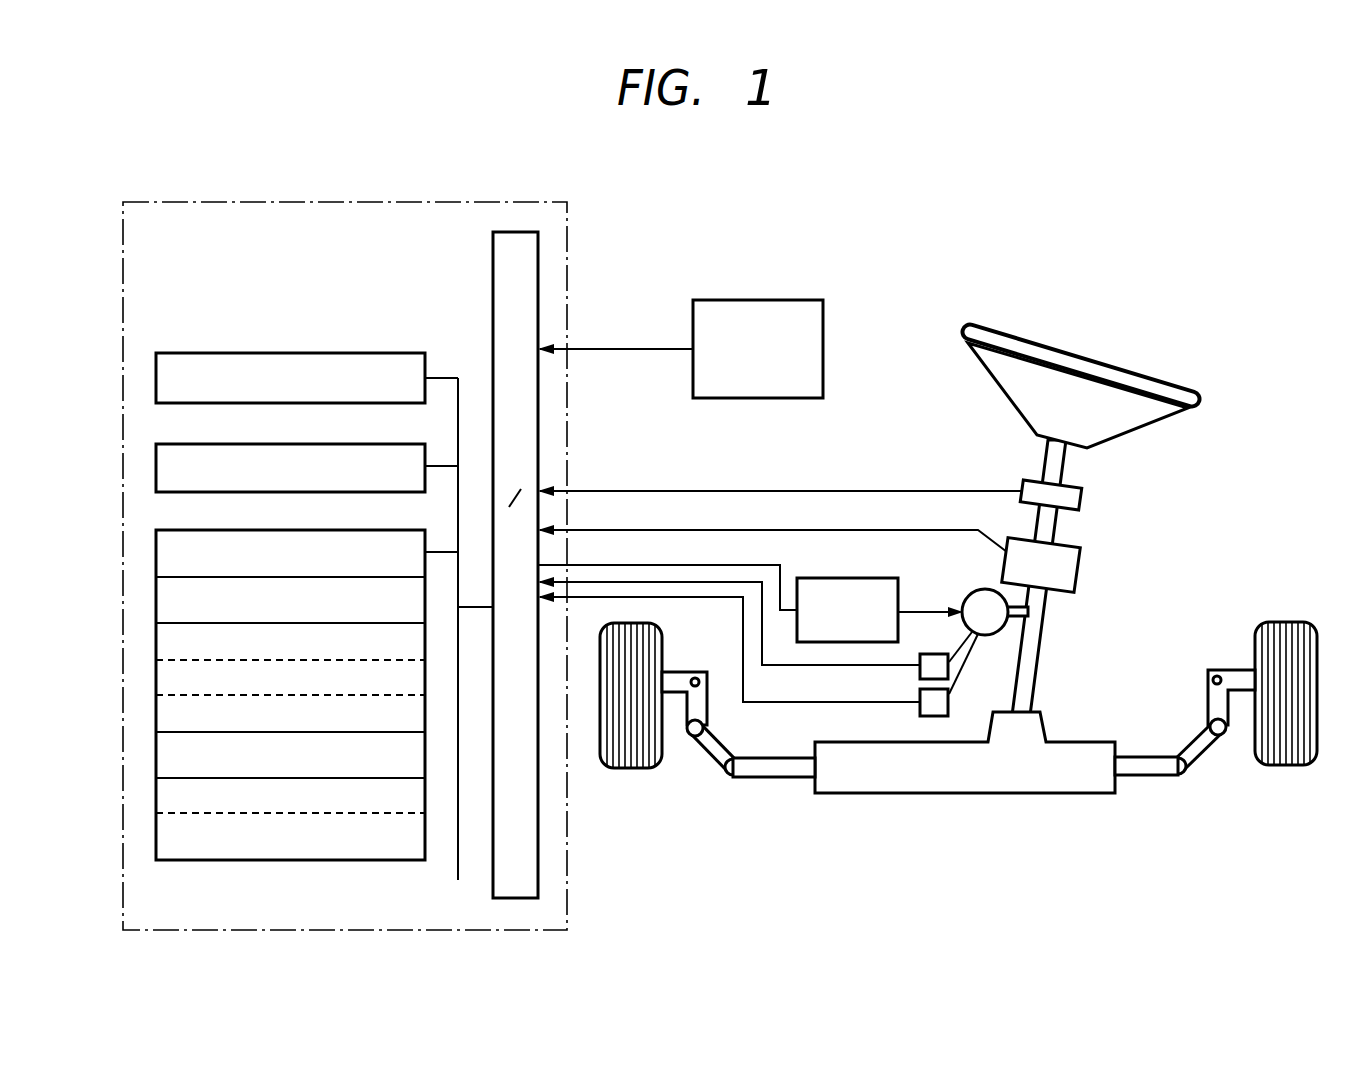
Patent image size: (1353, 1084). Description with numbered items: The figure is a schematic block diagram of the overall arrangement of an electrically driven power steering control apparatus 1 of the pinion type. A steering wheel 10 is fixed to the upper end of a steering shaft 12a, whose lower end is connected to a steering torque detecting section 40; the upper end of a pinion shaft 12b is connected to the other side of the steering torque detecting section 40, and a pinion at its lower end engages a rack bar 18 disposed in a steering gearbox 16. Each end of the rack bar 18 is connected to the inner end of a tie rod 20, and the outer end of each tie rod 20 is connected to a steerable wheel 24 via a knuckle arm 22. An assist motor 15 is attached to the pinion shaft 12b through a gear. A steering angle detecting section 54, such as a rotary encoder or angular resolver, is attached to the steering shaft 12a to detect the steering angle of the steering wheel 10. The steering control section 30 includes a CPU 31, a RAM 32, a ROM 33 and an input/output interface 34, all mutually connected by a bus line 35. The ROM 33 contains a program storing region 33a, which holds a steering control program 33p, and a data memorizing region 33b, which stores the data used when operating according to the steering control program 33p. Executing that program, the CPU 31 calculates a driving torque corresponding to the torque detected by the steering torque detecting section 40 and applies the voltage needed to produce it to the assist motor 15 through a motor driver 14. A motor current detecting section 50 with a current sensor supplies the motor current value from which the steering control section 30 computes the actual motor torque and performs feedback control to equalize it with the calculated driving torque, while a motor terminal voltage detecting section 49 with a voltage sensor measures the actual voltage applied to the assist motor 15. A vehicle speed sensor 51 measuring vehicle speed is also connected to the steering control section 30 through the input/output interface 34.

The electrically driven power steering control apparatus 1 is at (1045, 205).
The steering wheel 10 is at (1090, 364).
The steering shaft 12a is at (1054, 461).
The pinion shaft 12b is at (1026, 702).
The motor driver 14 is at (857, 578).
The assist motor 15 is at (978, 590).
The steering gearbox 16 is at (984, 793).
The rack bar 18 is at (771, 771).
The tie rod 20 is at (714, 753).
The knuckle arm 22 is at (682, 672).
The steerable wheel 24 is at (625, 769).
The steering control section 30 is at (432, 202).
The CPU 31 is at (383, 353).
The RAM 32 is at (383, 444).
The ROM 33 is at (383, 530).
The program storing region 33a is at (157, 603).
The steering control program 33p is at (157, 645).
The data memorizing region 33b is at (157, 757).
The input/output interface 34 is at (493, 889).
The bus line 35 is at (458, 863).
The steering torque detecting section 40 is at (1074, 565).
The motor terminal voltage detecting section 49 is at (932, 654).
The motor current detecting section 50 is at (920, 706).
The vehicle speed sensor 51 is at (778, 300).
The steering angle detecting section 54 is at (1078, 497).